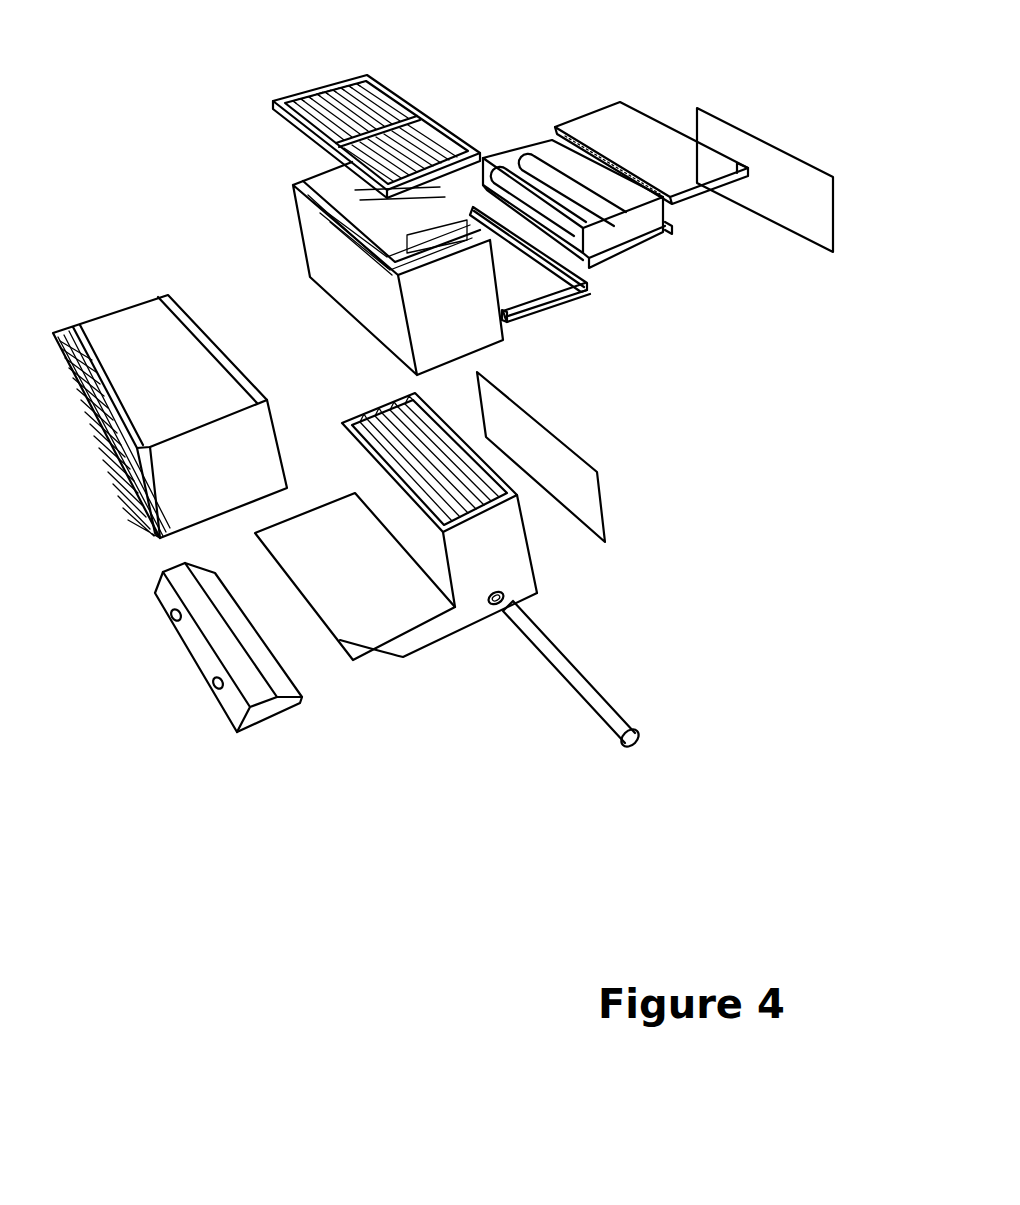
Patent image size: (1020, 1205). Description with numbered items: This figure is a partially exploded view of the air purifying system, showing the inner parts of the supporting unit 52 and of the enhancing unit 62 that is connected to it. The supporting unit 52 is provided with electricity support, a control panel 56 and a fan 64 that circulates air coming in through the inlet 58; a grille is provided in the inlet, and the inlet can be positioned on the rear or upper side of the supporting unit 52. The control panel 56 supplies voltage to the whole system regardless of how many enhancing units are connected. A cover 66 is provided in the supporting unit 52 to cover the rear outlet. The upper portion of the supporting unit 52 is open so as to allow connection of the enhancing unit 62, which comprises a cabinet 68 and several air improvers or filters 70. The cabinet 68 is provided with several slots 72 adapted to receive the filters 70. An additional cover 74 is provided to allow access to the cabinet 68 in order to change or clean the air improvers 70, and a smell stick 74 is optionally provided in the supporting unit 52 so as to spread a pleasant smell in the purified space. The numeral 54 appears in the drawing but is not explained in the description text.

The supporting unit 52 is at (515, 597).
The grille housing 54 is at (103, 342).
The control panel 56 is at (228, 695).
The inlet 58 is at (338, 110).
The enhancing unit 62 is at (688, 322).
The fan 64 is at (435, 475).
The cover 66 is at (553, 462).
The cabinet 68 is at (477, 348).
The air improvers or filters 70 is at (607, 135).
The slots 72 is at (367, 222).
The additional cover / smell stick 74 is at (755, 167).